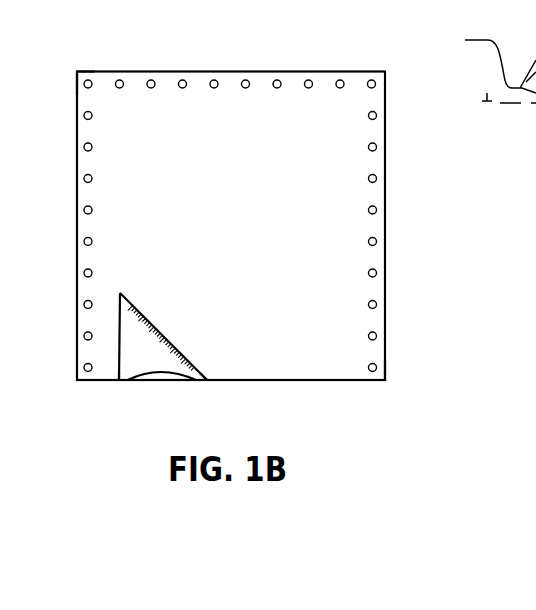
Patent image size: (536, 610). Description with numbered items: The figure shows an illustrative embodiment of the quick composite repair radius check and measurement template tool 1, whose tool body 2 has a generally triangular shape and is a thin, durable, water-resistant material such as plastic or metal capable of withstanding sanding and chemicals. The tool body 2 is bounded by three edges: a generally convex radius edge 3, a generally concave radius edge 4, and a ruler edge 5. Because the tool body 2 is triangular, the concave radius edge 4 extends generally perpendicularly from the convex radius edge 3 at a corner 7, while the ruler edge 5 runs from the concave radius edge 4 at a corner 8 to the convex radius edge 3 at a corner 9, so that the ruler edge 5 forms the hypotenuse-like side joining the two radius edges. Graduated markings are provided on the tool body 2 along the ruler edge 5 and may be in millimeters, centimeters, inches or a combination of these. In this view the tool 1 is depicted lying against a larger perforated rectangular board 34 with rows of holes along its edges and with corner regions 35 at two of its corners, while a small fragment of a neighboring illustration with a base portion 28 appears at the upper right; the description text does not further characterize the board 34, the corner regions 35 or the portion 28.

The tool 1 is at (161, 339).
The tool body 2 is at (148, 313).
The convex radius edge 3 is at (117, 318).
The concave radius edge 4 is at (158, 380).
The ruler edge 5 is at (178, 350).
The corner 7 is at (120, 380).
The corner 8 is at (207, 380).
The corner 9 is at (120, 292).
The base portion 28 is at (535, 132).
The perforated board 34 is at (385, 237).
The corner tabs 35 is at (77, 95).